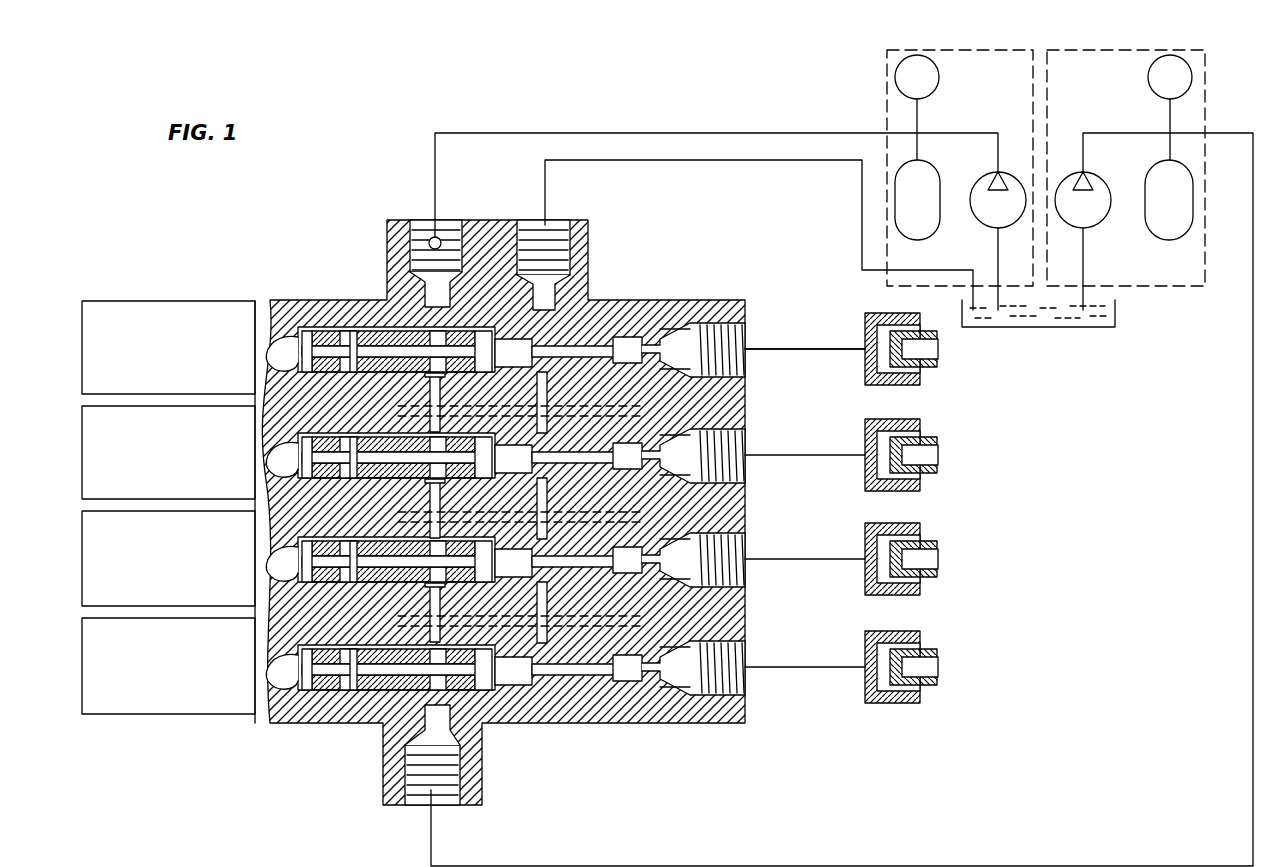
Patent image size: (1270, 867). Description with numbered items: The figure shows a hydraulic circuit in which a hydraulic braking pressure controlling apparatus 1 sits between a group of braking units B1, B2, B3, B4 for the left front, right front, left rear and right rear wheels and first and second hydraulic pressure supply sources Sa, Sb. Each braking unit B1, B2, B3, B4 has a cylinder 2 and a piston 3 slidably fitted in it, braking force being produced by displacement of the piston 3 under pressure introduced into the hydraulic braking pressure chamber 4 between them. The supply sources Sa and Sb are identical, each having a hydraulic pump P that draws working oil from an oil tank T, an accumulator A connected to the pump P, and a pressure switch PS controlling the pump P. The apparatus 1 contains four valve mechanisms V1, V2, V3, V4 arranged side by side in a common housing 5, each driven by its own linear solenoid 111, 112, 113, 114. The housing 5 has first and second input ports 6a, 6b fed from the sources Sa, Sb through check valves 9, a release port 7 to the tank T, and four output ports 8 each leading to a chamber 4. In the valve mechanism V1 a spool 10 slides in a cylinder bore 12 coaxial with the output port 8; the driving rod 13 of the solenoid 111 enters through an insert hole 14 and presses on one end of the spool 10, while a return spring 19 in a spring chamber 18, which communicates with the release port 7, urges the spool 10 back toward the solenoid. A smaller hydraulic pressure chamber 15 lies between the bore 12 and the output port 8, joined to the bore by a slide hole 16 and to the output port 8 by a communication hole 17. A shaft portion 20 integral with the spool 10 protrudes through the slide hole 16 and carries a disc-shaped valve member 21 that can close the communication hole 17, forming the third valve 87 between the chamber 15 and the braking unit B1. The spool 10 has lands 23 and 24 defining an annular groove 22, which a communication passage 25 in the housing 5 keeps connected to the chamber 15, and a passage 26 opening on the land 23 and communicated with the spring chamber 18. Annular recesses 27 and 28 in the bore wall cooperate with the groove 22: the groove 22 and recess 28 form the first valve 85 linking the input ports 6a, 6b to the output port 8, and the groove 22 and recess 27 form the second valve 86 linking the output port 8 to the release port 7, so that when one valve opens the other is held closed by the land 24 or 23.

The hydraulic braking pressure controlling apparatus 1 is at (650, 300).
The cylinder 2 is at (868, 326).
The piston 3 is at (937, 358).
The hydraulic braking pressure chamber 4 is at (870, 378).
The housing 5 is at (690, 300).
The first input port 6a is at (456, 232).
The second input port 6b is at (446, 808).
The release port 7 is at (550, 222).
The output port 8 is at (748, 352).
The check valve 9 is at (431, 238).
The spool 10 is at (330, 372).
The cylinder bore 12 is at (440, 328).
The driving rod 13 is at (280, 337).
The insert hole 14 is at (280, 355).
The hydraulic pressure chamber 15 is at (628, 338).
The slide hole 16 is at (568, 346).
The communication hole 17 is at (656, 360).
The spring chamber 18 is at (540, 312).
The return spring 19 is at (550, 334).
The shaft portion 20 is at (565, 358).
The valve member 21 is at (610, 365).
The annular groove 22 is at (430, 310).
The land 23 is at (330, 330).
The land 24 is at (444, 374).
The communication passage 25 is at (650, 408).
The passage 26 is at (396, 372).
The annular recess 27 is at (362, 332).
The annular recess 28 is at (440, 395).
The first valve 85 is at (465, 290).
The second valve 86 is at (392, 300).
The third valve 87 is at (655, 325).
The valve mechanism V1 is at (610, 304).
The valve mechanism V2 is at (608, 454).
The valve mechanism V3 is at (608, 558).
The valve mechanism V4 is at (615, 668).
The braking unit B1 is at (950, 370).
The braking unit B2 is at (950, 476).
The braking unit B3 is at (950, 580).
The braking unit B4 is at (950, 690).
The linear solenoid 111 is at (168, 347).
The linear solenoid 112 is at (168, 452).
The linear solenoid 113 is at (168, 558).
The linear solenoid 114 is at (168, 666).
The first hydraulic pressure supply source Sa is at (946, 50).
The second hydraulic pressure supply source Sb is at (1076, 50).
The pressure switch PS is at (940, 78).
The accumulator A is at (1150, 164).
The hydraulic pump P is at (982, 222).
The oil tank T is at (1058, 327).